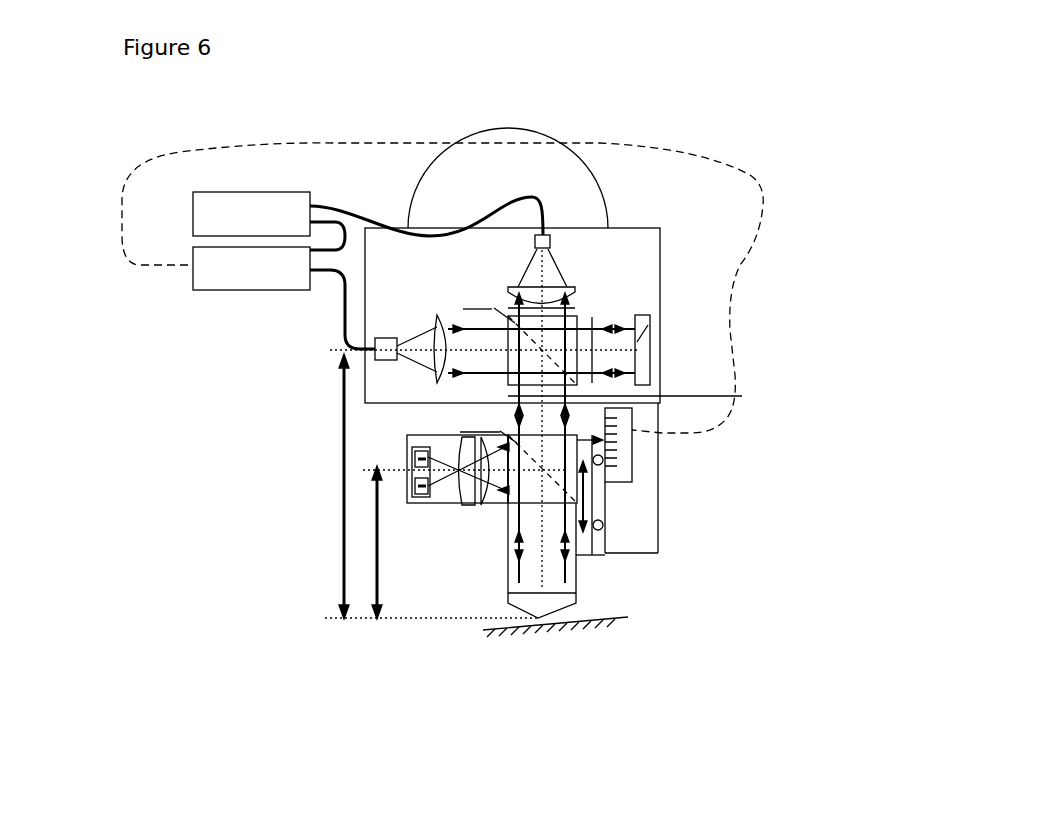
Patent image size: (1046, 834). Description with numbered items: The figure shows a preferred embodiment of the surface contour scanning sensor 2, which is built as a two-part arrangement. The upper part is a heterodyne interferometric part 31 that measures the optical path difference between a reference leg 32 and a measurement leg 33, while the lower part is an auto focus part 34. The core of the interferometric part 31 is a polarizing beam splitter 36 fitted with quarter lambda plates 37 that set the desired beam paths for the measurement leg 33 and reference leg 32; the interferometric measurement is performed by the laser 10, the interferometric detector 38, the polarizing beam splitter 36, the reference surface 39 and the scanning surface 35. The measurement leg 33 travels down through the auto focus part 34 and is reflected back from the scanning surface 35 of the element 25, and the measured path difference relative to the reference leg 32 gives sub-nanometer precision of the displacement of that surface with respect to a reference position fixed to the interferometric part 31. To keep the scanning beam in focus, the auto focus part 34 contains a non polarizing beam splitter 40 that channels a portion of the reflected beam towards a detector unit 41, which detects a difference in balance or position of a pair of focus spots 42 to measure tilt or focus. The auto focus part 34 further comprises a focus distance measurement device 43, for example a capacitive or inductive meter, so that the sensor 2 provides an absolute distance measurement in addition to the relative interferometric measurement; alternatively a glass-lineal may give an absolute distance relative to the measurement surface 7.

The surface contour scanning sensor 2 is at (208, 546).
The measurement surface 7 is at (445, 172).
The laser 10 is at (238, 227).
The element 25 is at (530, 605).
The interferometric part 31 is at (647, 218).
The reference leg 32 is at (603, 342).
The measurement leg 33 is at (547, 408).
The auto focus part 34 is at (490, 578).
The scanning surface 35 is at (548, 622).
The polarizing beam splitter 36 is at (568, 320).
The quarter lambda plates 37 is at (592, 358).
The interferometric detector 38 is at (284, 298).
The reference surface 39 is at (638, 365).
The non polarizing beam splitter 40 is at (500, 507).
The detector unit 41 is at (410, 438).
The focus spots 42 is at (410, 455).
The focus distance measurement device 43 is at (635, 450).